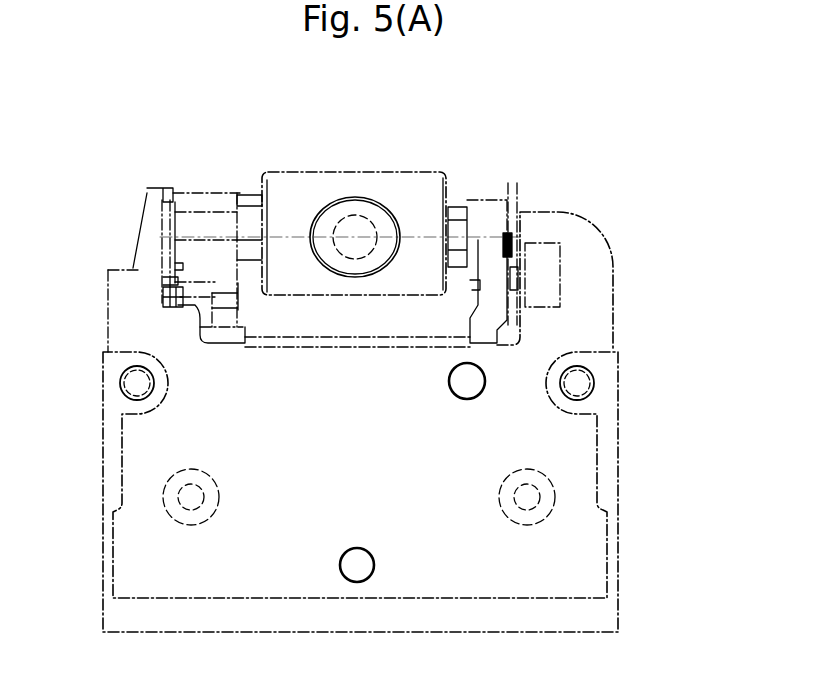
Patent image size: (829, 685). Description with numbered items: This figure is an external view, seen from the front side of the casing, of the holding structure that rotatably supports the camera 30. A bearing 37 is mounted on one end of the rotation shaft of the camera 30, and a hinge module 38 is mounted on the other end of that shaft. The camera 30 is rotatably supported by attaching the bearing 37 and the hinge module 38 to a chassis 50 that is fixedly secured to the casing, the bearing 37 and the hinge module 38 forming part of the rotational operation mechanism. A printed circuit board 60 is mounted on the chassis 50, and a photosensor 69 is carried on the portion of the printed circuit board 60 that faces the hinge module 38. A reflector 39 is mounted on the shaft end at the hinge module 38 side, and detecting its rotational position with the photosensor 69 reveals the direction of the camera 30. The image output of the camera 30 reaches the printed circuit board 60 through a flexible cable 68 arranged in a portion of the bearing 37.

The camera 30 is at (308, 197).
The bearing 37 is at (192, 193).
The hinge module 38 is at (455, 207).
The reflector 39 is at (517, 195).
The chassis 50 is at (605, 618).
The printed circuit board 60 is at (590, 531).
The flexible cable 68 is at (157, 300).
The photosensor 69 is at (560, 280).